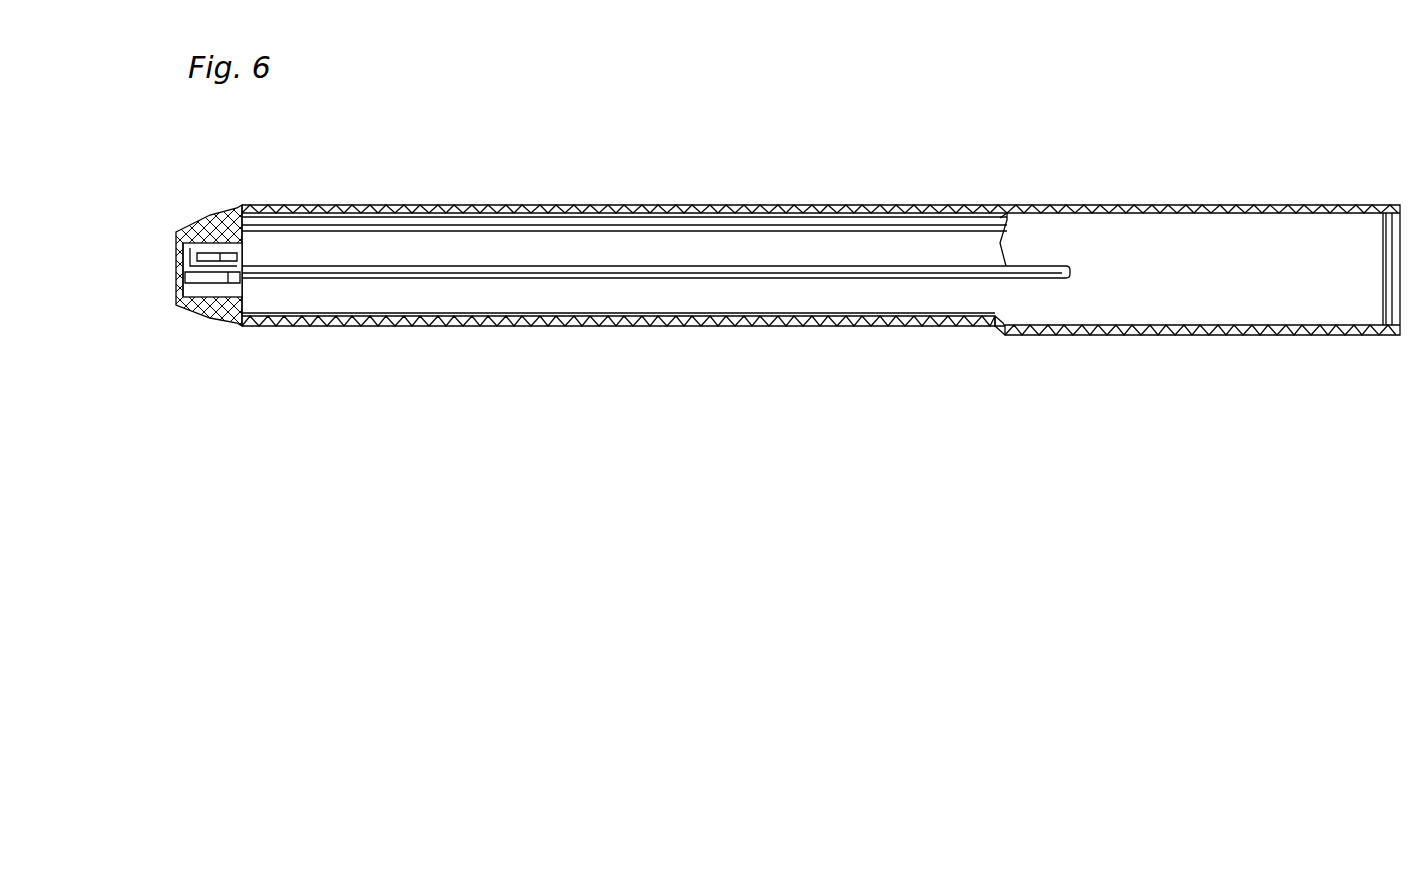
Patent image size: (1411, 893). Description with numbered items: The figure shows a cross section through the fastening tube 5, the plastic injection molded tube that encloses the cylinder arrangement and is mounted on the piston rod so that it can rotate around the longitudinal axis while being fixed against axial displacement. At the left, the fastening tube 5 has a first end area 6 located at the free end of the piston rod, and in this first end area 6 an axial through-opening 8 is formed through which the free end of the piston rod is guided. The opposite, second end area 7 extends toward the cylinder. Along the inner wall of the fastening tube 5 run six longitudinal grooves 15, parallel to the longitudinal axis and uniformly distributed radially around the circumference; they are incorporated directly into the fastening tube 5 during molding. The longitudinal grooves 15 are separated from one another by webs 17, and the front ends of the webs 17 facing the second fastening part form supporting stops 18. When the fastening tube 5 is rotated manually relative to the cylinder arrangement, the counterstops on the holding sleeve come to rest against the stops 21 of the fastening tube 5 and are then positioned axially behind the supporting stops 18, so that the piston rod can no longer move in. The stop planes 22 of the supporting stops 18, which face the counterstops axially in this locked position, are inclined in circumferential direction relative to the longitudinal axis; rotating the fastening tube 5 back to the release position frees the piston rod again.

The fastening tube 5 is at (833, 158).
The first end area 6 is at (213, 318).
The second end area 7 is at (1262, 336).
The axial through-opening 8 is at (185, 250).
The longitudinal grooves 15 is at (573, 243).
The webs 17 is at (720, 225).
The supporting stops 18 is at (1005, 255).
The stops 21 is at (1067, 263).
The stop planes 22 is at (1007, 220).